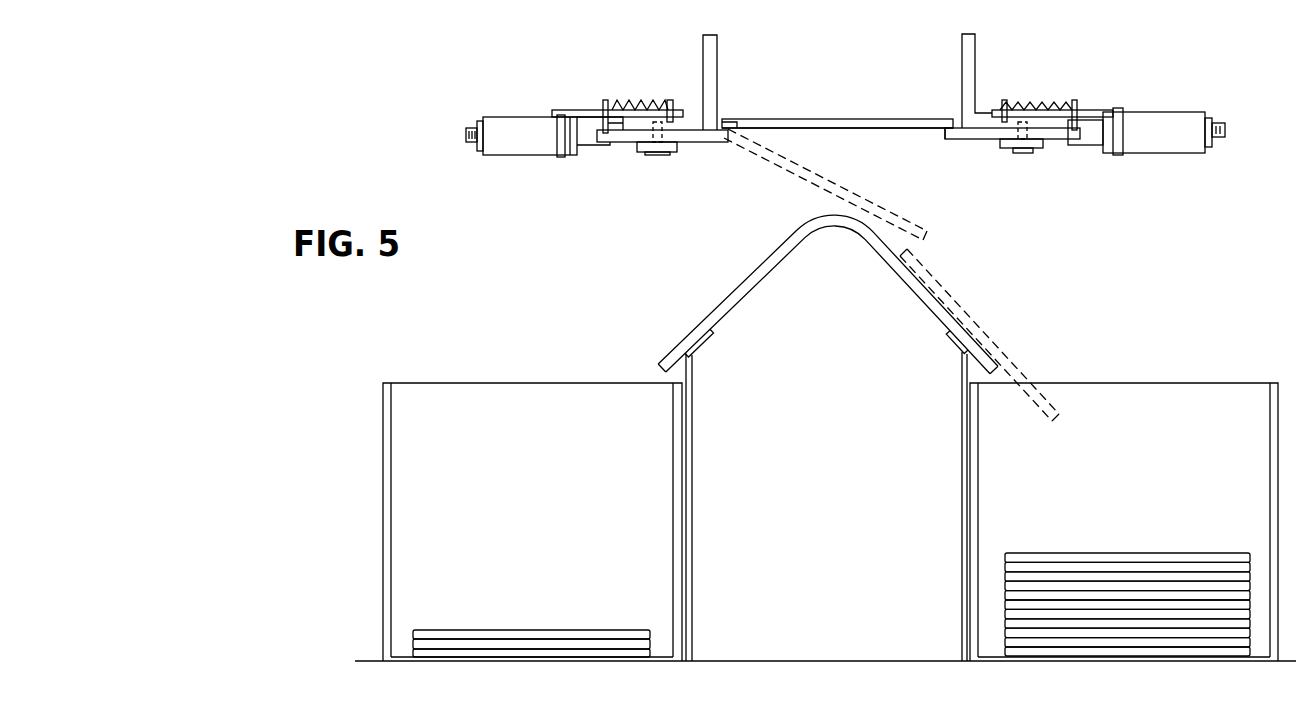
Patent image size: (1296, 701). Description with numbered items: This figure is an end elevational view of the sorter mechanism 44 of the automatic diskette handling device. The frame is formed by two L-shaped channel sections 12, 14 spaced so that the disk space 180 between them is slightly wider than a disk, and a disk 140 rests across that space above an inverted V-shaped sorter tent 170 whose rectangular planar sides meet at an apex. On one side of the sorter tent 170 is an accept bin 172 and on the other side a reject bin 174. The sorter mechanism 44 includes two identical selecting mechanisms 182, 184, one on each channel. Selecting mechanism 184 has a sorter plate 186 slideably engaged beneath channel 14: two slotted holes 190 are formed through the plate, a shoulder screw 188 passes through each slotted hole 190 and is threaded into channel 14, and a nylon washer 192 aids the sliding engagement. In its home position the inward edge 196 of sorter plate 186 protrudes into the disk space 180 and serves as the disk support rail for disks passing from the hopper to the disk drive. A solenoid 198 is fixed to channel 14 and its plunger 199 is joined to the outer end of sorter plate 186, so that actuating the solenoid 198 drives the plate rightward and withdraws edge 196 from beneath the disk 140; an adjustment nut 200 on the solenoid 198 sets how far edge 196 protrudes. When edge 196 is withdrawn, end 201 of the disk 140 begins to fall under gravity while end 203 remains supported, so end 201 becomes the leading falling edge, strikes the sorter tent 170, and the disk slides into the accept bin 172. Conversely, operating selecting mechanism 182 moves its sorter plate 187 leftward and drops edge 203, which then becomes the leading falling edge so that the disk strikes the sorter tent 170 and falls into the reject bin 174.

The L-shaped channel section 12 is at (703, 58).
The L-shaped channel section 14 is at (975, 58).
The sorter mechanism 44 is at (834, 410).
The disk 140 is at (835, 128).
The sorter tent 170 is at (747, 291).
The accept bin 172 is at (1104, 509).
The reject bin 174 is at (534, 510).
The disk space 180 is at (858, 104).
The selecting mechanism 182 is at (552, 95).
The selecting mechanism 184 is at (1132, 86).
The sorter plate 186 is at (992, 146).
The sorter plate 187 is at (698, 143).
The shoulder screw 188 is at (1015, 149).
The slotted hole 190 is at (1006, 148).
The nylon washer 192 is at (1030, 153).
The inward edge 196 is at (945, 140).
The solenoid 198 is at (1168, 128).
The plunger 199 is at (1093, 140).
The adjustment nut 200 is at (1222, 140).
The end of disk 201 is at (953, 121).
The end of disk 203 is at (729, 126).